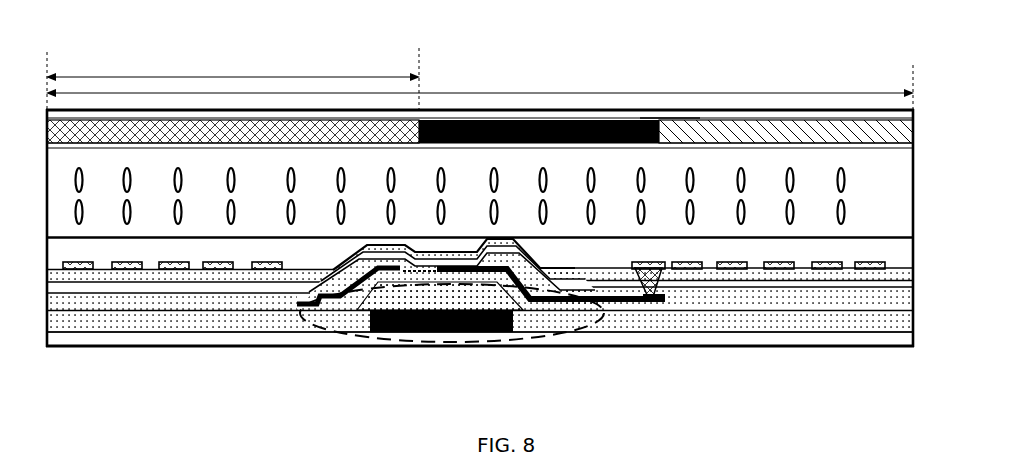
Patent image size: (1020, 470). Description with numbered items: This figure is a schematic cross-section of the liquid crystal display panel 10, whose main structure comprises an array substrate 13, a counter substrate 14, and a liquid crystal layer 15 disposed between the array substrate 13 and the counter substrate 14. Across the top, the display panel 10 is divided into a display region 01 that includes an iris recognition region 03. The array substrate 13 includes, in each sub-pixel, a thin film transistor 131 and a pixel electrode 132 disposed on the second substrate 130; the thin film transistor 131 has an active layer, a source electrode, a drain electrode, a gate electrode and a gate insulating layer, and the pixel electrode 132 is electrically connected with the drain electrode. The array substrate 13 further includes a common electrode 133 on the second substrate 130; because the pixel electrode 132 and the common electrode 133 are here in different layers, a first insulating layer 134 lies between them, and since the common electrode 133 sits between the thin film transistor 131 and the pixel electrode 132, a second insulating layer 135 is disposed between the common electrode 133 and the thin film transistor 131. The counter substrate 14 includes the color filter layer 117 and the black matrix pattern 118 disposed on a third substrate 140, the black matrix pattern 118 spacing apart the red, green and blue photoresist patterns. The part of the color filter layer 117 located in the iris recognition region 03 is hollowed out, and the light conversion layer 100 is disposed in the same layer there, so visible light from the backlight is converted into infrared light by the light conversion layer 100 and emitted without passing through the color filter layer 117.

The display panel 10 is at (68, 40).
The iris recognition region 03 is at (233, 78).
The display region 01 is at (480, 87).
The counter substrate 14 is at (917, 110).
The light conversion layer 100 is at (287, 136).
The black matrix pattern 118 is at (598, 118).
The third substrate 140 is at (663, 117).
The color filter layer 117 is at (717, 128).
The liquid crystal layer 15 is at (893, 190).
The array substrate 13 is at (922, 237).
The second substrate 130 is at (657, 337).
The thin film transistor 131 is at (472, 340).
The pixel electrode 132 is at (880, 268).
The common electrode 133 is at (792, 282).
The first insulating layer 134 is at (840, 273).
The second insulating layer 135 is at (732, 298).